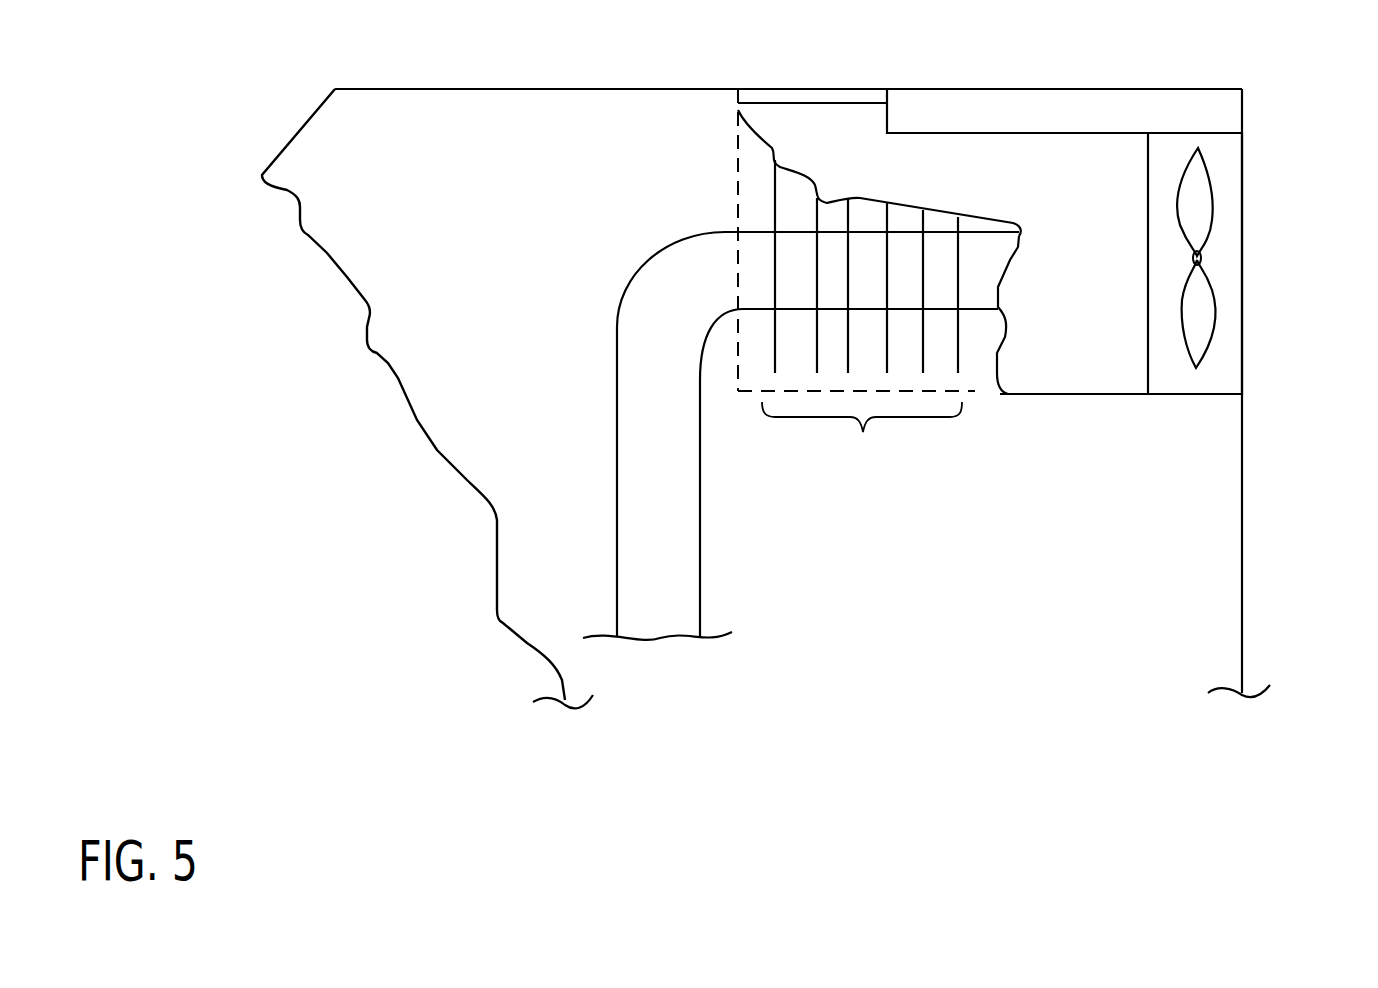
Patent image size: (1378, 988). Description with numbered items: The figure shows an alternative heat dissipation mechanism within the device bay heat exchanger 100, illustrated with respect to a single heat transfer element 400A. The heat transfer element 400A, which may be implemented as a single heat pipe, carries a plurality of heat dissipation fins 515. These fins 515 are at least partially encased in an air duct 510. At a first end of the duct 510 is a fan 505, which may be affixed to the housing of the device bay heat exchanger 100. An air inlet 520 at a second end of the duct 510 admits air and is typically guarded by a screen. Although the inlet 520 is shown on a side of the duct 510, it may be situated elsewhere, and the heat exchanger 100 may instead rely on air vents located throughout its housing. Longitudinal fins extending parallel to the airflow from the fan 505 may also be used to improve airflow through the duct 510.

The device bay heat exchanger 100 is at (407, 382).
The heat transfer element 400A is at (708, 517).
The fan 505 is at (1255, 267).
The air duct 510 is at (1082, 397).
The heat dissipation fins 515 is at (863, 435).
The air inlet 520 is at (813, 88).